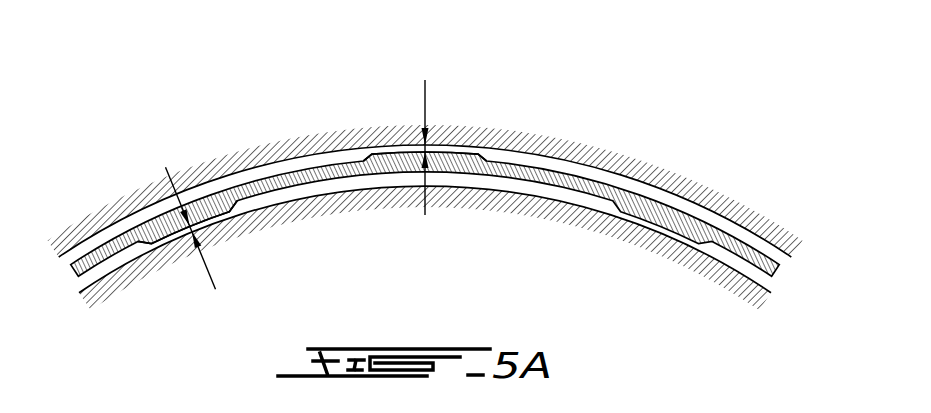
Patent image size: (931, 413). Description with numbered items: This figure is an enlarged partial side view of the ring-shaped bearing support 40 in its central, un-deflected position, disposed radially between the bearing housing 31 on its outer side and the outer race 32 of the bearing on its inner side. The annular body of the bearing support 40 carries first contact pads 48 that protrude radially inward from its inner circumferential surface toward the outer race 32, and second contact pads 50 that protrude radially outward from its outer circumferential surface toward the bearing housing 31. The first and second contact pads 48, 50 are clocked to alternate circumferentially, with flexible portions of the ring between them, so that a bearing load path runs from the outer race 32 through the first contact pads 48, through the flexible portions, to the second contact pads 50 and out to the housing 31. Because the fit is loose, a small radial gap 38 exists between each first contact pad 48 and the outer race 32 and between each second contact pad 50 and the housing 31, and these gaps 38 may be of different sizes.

The bearing housing 31 is at (321, 143).
The outer race 32 is at (308, 198).
The radial gap 38 is at (426, 148).
The bearing support 40 is at (612, 172).
The first contact pad 48 is at (168, 236).
The second contact pad 50 is at (454, 153).